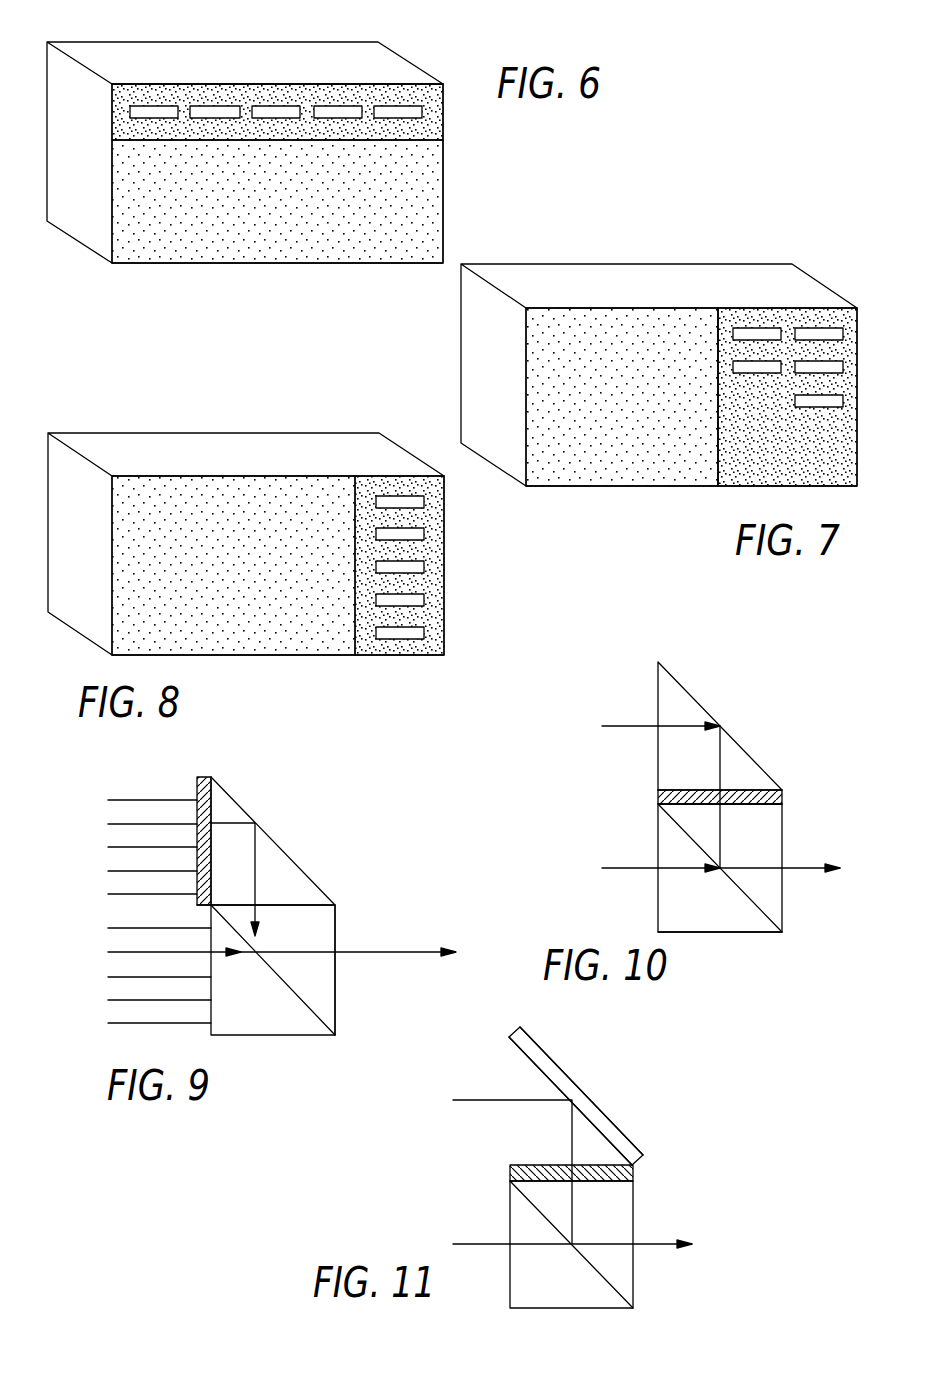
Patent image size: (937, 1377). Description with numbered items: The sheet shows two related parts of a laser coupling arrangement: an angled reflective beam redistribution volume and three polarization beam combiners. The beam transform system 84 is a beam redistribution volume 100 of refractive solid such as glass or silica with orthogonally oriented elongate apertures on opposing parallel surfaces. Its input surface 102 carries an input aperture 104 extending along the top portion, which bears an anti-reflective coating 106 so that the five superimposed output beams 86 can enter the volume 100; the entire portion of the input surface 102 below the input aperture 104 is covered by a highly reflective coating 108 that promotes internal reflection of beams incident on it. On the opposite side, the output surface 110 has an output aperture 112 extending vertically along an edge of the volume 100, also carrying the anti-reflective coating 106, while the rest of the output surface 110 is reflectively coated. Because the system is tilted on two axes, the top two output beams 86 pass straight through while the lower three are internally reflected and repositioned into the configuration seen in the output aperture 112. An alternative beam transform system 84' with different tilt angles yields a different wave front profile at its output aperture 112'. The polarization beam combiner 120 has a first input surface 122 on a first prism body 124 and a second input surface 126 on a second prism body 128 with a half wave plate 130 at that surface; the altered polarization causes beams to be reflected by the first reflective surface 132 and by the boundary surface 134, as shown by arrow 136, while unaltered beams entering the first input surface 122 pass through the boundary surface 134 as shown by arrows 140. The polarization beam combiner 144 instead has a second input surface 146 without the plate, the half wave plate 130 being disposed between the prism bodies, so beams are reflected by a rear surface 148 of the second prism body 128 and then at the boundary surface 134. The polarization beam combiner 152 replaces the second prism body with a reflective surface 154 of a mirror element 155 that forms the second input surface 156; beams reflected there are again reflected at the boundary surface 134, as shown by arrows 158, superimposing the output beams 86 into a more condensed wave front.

In FIG. 6, the beam transform system 84 is at (278, 172).
In FIG. 7, the beam transform system 84 is at (646, 379).
In FIG. 8, the beam transform system 84' is at (281, 531).
In FIG. 6, the output beams 86 is at (152, 106).
In FIG. 7, the output beams 86 is at (816, 332).
In FIG. 8, the output beams 86 is at (400, 567).
In FIG. 9, the output beams 86 is at (125, 800).
In FIG. 10, the output beams 86 is at (627, 726).
In FIG. 11, the output beams 86 is at (488, 1100).
In FIG. 6, the beam redistribution volume 100 is at (72, 207).
In FIG. 7, the beam redistribution volume 100 is at (480, 358).
In FIG. 8, the beam redistribution volume 100 is at (74, 588).
In FIG. 6, the input surface 102 is at (412, 210).
In FIG. 6, the input aperture 104 is at (120, 100).
In FIG. 6, the anti-reflective coating 106 is at (428, 128).
In FIG. 7, the anti-reflective coating 106 is at (833, 468).
In FIG. 6, the highly reflective coating 108 is at (303, 221).
In FIG. 7, the highly reflective coating 108 is at (660, 455).
In FIG. 7, the output surface 110 is at (590, 455).
In FIG. 7, the output aperture 112 is at (797, 412).
In FIG. 8, the output aperture 112' is at (434, 565).
In FIG. 9, the polarization beam combiner 120 is at (253, 904).
In FIG. 9, the first input surface 122 is at (208, 1032).
In FIG. 10, the first input surface 122 is at (658, 900).
In FIG. 11, the first input surface 122 is at (571, 1236).
In FIG. 9, the first prism body 124 is at (337, 980).
In FIG. 10, the first prism body 124 is at (760, 932).
In FIG. 9, the second input surface 126 is at (197, 787).
In FIG. 9, the second prism body 128 is at (275, 838).
In FIG. 10, the second prism body 128 is at (695, 695).
In FIG. 9, the half wave plate 130 is at (205, 798).
In FIG. 10, the half wave plate 130 is at (782, 797).
In FIG. 9, the first reflective surface 132 is at (256, 880).
In FIG. 9, the boundary surface 134 is at (288, 985).
In FIG. 10, the boundary surface 134 is at (742, 895).
In FIG. 11, the boundary surface 134 is at (595, 1272).
In FIG. 9, the arrow 136 is at (315, 950).
In FIG. 9, the arrows 140 is at (158, 952).
In FIG. 10, the polarization beam combiner 144 is at (712, 810).
In FIG. 10, the second input surface 146 is at (658, 757).
In FIG. 10, the rear surface 148 is at (658, 797).
In FIG. 11, the polarization beam combiner 152 is at (581, 1175).
In FIG. 11, the reflective surface 154 is at (525, 1060).
In FIG. 11, the mirror element 155 is at (556, 1062).
In FIG. 11, the second input surface 156 is at (548, 1085).
In FIG. 11, the arrows 158 is at (652, 1244).